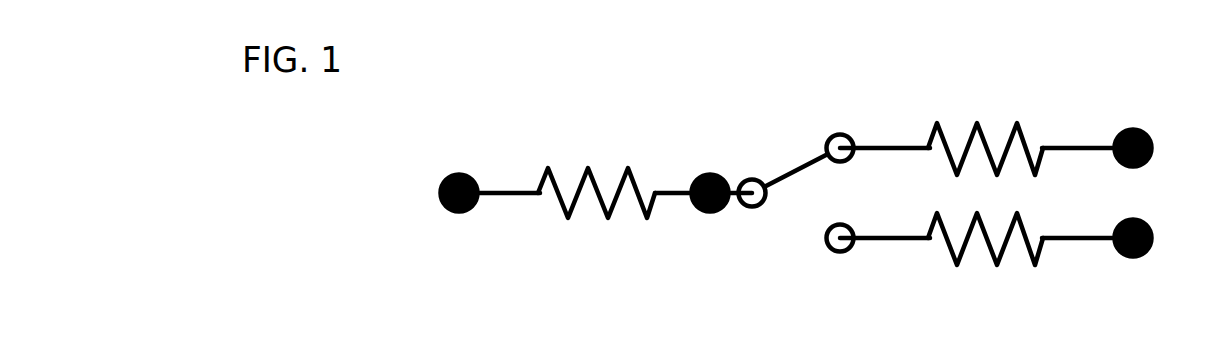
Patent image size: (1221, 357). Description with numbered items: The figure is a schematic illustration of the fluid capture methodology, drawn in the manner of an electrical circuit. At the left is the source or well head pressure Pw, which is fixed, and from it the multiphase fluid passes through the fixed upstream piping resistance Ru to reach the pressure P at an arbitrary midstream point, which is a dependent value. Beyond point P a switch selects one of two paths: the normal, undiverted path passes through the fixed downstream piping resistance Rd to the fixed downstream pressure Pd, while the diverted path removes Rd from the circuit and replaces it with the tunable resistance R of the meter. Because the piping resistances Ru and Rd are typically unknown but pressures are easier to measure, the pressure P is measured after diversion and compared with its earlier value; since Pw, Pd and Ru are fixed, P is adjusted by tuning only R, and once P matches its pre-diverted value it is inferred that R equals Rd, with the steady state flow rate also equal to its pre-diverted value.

The source or well head pressure Pw is at (457, 169).
The upstream piping resistance Ru is at (596, 162).
The pressure at arbitrary point midstream P is at (710, 170).
The downstream piping resistance Rd is at (985, 120).
The pressure downstream Pd is at (1133, 123).
The resistance of meter R is at (985, 261).